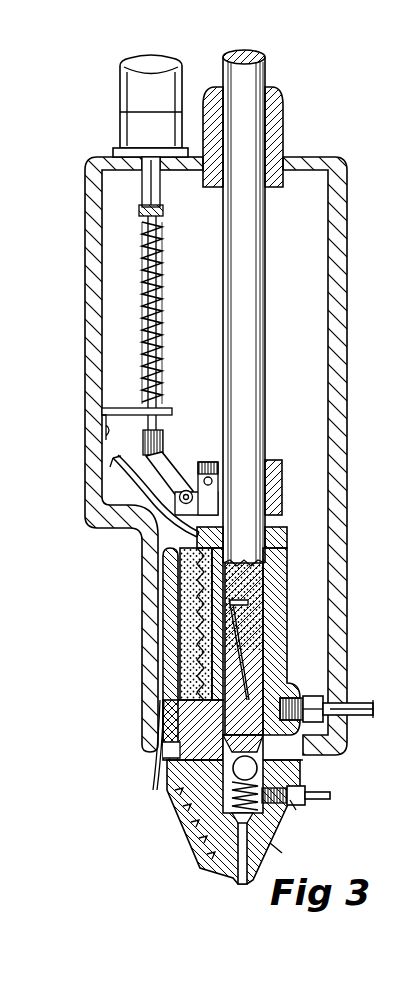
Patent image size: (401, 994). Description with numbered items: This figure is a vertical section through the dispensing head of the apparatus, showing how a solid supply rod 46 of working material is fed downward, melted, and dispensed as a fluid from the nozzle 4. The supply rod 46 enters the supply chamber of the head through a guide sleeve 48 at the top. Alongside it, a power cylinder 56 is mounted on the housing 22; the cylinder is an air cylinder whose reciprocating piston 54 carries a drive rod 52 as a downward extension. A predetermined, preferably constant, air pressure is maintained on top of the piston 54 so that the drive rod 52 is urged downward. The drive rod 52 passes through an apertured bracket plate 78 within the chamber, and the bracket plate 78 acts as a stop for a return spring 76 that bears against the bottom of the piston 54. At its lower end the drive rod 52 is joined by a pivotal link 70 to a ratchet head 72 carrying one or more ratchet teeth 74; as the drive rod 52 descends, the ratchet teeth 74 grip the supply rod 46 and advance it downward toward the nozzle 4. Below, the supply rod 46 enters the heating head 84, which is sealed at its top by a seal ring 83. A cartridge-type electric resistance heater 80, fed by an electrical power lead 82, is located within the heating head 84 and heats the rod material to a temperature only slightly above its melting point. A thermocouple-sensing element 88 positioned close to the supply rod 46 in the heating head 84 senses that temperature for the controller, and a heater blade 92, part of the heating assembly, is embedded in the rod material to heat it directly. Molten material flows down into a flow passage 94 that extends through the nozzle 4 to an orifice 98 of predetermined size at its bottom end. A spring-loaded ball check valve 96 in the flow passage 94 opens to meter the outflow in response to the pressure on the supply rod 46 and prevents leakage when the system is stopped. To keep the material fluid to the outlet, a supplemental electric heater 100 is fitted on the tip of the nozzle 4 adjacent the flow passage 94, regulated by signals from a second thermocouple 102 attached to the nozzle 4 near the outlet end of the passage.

The housing 22 is at (82, 330).
The supply rod 46 is at (262, 60).
The guide sleeve 48 is at (283, 120).
The drive rod 52 is at (163, 320).
The reciprocating piston 54 is at (163, 211).
The power cylinder 56 is at (122, 90).
The pivotal link 70 is at (162, 453).
The ratchet head 72 is at (277, 460).
The ratchet teeth 74 is at (236, 492).
The return spring 76 is at (163, 292).
The apertured bracket plate 78 is at (160, 410).
The electric resistance heater 80 is at (187, 592).
The electrical power lead 82 is at (117, 490).
The seal ring 83 is at (283, 531).
The heating head 84 is at (285, 600).
The thermocouple-sensing element 88 is at (310, 696).
The heater blade 92 is at (272, 676).
The flow passage 94 is at (292, 790).
The spring-loaded ball check valve 96 is at (232, 768).
The orifice 98 is at (243, 885).
The supplemental electric heater 100 is at (178, 832).
The thermocouple 102 is at (297, 810).
The nozzle 4 is at (270, 845).